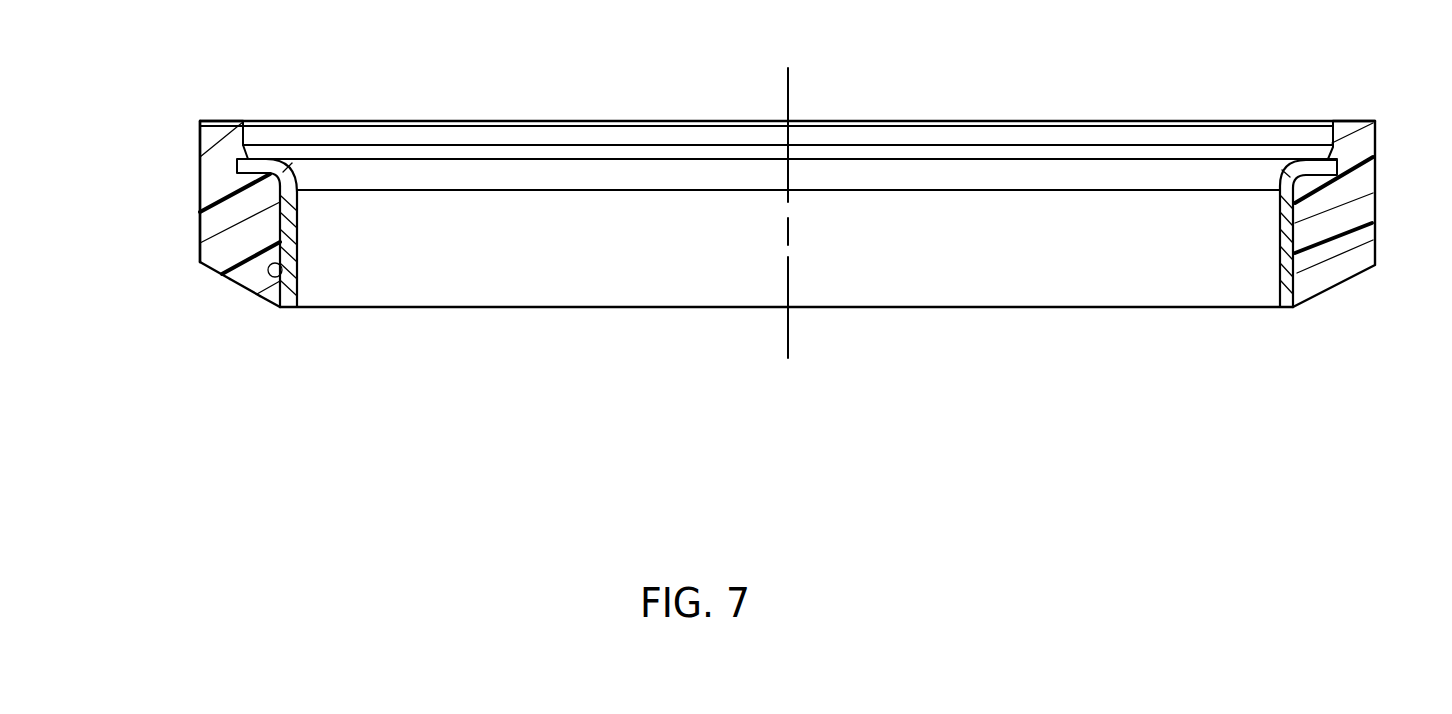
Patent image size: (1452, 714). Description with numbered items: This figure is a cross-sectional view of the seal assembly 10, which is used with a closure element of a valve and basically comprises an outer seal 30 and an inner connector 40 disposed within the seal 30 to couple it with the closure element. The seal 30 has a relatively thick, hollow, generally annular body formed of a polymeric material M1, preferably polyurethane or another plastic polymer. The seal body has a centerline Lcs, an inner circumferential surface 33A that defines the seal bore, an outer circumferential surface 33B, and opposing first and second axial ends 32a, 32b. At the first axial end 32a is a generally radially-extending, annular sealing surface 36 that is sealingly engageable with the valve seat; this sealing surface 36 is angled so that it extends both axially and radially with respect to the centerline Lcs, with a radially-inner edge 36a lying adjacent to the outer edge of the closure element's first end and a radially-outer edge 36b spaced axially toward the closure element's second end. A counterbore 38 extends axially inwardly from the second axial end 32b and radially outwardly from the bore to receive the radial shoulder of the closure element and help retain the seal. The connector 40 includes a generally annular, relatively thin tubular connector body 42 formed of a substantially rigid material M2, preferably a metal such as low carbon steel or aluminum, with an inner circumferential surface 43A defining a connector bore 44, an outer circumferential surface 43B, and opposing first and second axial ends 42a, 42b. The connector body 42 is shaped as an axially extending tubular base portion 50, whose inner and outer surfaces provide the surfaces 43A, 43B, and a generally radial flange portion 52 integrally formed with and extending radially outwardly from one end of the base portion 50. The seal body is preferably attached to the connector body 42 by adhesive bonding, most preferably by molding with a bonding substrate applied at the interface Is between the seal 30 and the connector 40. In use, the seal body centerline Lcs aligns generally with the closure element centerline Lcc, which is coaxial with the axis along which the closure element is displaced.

The seal assembly 10 is at (1150, 64).
The outer seal 30 is at (1353, 297).
The seal body first axial end 32a is at (430, 310).
The seal body second axial end 32b is at (395, 118).
The inner circumferential surface 33A is at (298, 218).
The outer circumferential surface 33B is at (198, 195).
The sealing surface 36 is at (240, 296).
The radially-inner edge 36a is at (280, 309).
The radially-outer edge 36b is at (200, 263).
The counterbore 38 is at (265, 135).
The inner connector 40 is at (1292, 330).
The connector body 42 is at (1252, 311).
The connector body first axial end 42a is at (288, 309).
The connector body second axial end 42b is at (268, 158).
The connector inner circumferential surface 43A is at (298, 247).
The connector outer circumferential surface 43B is at (281, 277).
The connector bore 44 is at (1025, 284).
The tubular base portion 50 is at (1272, 240).
The radial flange portion 52 is at (1312, 156).
The polymeric material M1 is at (1358, 188).
The rigid material M2 is at (1287, 269).
The interface Is is at (1292, 233).
The seal body centerline Lcs is at (788, 77).
The closure element centerline Lcc is at (840, 205).